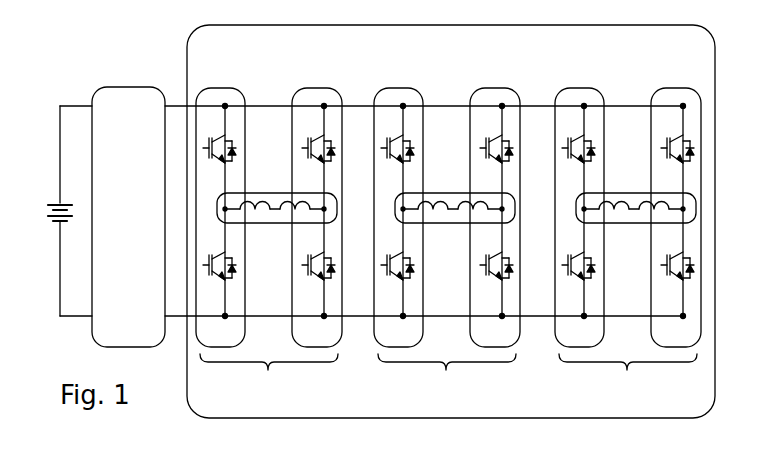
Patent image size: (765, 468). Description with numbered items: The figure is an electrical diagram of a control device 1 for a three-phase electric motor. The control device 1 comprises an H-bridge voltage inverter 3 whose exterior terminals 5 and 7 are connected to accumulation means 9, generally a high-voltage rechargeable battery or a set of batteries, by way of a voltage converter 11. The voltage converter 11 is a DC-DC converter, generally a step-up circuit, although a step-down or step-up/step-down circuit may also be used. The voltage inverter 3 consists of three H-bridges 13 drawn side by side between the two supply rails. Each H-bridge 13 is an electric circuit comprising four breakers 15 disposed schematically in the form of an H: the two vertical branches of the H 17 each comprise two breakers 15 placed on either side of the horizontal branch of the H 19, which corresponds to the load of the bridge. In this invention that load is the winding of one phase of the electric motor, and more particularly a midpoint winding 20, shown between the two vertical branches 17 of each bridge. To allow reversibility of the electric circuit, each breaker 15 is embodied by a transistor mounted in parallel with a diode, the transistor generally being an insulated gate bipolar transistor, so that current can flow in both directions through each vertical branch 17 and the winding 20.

The control device 1 is at (157, 50).
The H-bridge voltage inverter 3 is at (563, 419).
The exterior terminal 5 is at (198, 94).
The exterior terminal 7 is at (231, 306).
The accumulation means 9 is at (56, 204).
The voltage converter 11 is at (113, 88).
The H-bridge 13 is at (450, 245).
The breaker 15 is at (454, 213).
The vertical branch of the H 17 is at (448, 157).
The horizontal branch of the H 19 is at (454, 241).
The midpoint winding 20 is at (456, 182).